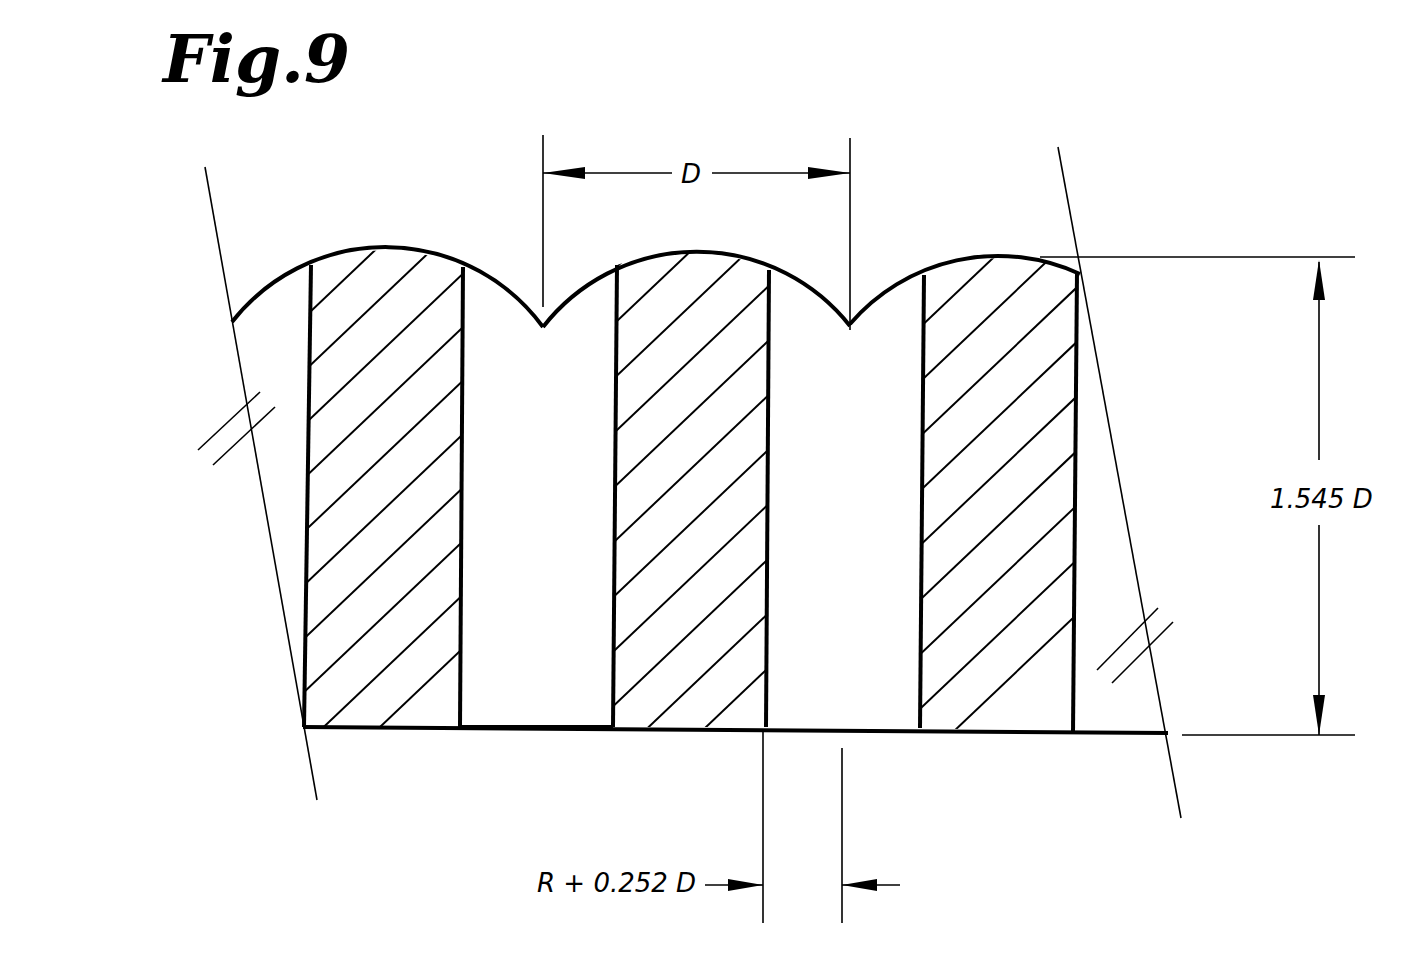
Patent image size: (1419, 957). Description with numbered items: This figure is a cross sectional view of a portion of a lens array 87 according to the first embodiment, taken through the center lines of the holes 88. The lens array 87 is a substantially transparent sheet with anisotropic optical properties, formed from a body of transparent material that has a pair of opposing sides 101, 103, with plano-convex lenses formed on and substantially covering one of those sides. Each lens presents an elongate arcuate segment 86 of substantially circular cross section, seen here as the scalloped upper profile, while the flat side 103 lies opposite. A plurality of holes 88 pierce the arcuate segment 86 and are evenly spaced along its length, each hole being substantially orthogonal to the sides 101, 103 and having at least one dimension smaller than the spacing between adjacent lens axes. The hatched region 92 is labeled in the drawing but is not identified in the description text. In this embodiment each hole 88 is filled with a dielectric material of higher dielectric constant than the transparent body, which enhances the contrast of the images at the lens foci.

The elongate arcuate segment 86 is at (900, 278).
The lens array 87 is at (240, 597).
The holes 88 is at (552, 657).
The rib 92 is at (1018, 670).
The side 101 is at (286, 228).
The side 103 is at (658, 766).